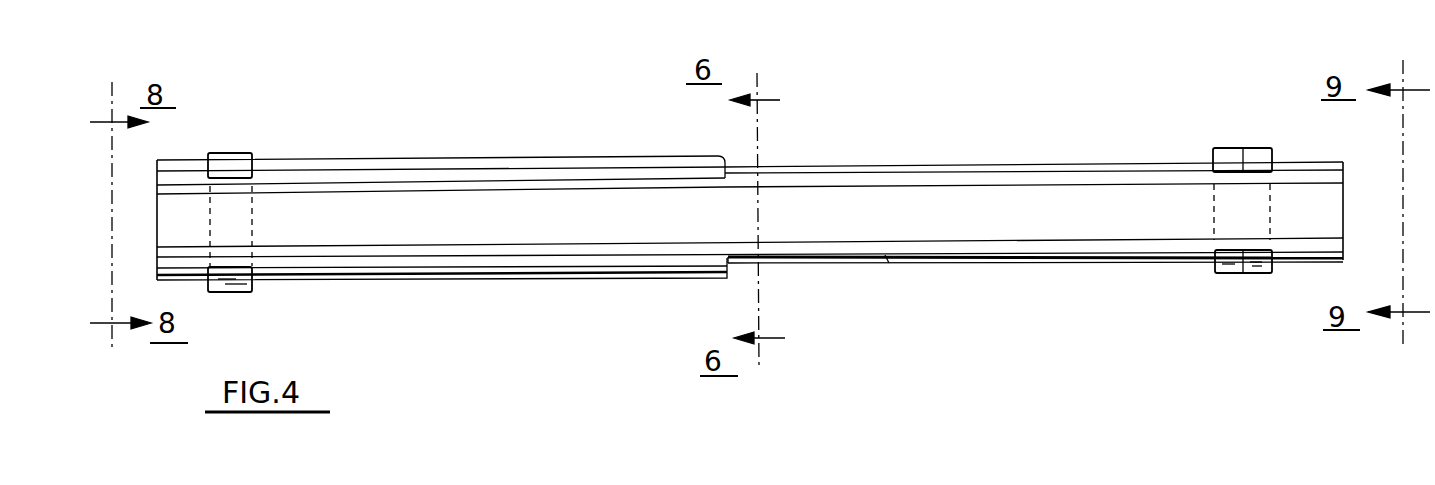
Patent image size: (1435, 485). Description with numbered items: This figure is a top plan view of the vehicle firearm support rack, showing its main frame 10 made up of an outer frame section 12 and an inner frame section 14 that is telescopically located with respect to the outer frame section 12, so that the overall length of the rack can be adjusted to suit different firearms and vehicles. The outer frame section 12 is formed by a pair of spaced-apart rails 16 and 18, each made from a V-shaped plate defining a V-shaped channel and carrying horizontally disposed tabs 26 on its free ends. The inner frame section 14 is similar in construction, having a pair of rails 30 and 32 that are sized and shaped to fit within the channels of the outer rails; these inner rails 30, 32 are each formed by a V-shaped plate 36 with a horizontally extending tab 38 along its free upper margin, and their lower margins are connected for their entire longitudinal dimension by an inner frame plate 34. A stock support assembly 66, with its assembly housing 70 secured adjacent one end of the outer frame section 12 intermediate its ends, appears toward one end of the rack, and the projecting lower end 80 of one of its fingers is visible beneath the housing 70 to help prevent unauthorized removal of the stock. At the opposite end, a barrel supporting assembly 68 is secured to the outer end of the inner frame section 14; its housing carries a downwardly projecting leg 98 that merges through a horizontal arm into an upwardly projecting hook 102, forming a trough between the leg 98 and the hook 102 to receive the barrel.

The main frame 10 is at (372, 136).
The outer frame section 12 is at (504, 157).
The inner frame section 14 is at (981, 153).
The rail 16 is at (600, 158).
The rail 18 is at (508, 270).
The horizontally disposed tabs 26 is at (458, 184).
The rail 30 is at (815, 166).
The rail 32 is at (825, 266).
The inner frame plate 34 is at (1030, 207).
The V-shaped plate 36 is at (901, 172).
The horizontally extending tab 38 is at (1110, 177).
The stock support assembly 66 is at (252, 146).
The barrel supporting assembly 68 is at (1232, 144).
The assembly housing 70 is at (228, 153).
The projecting lower end 80 is at (236, 285).
The leg 98 is at (1256, 160).
The hook 102 is at (1220, 260).